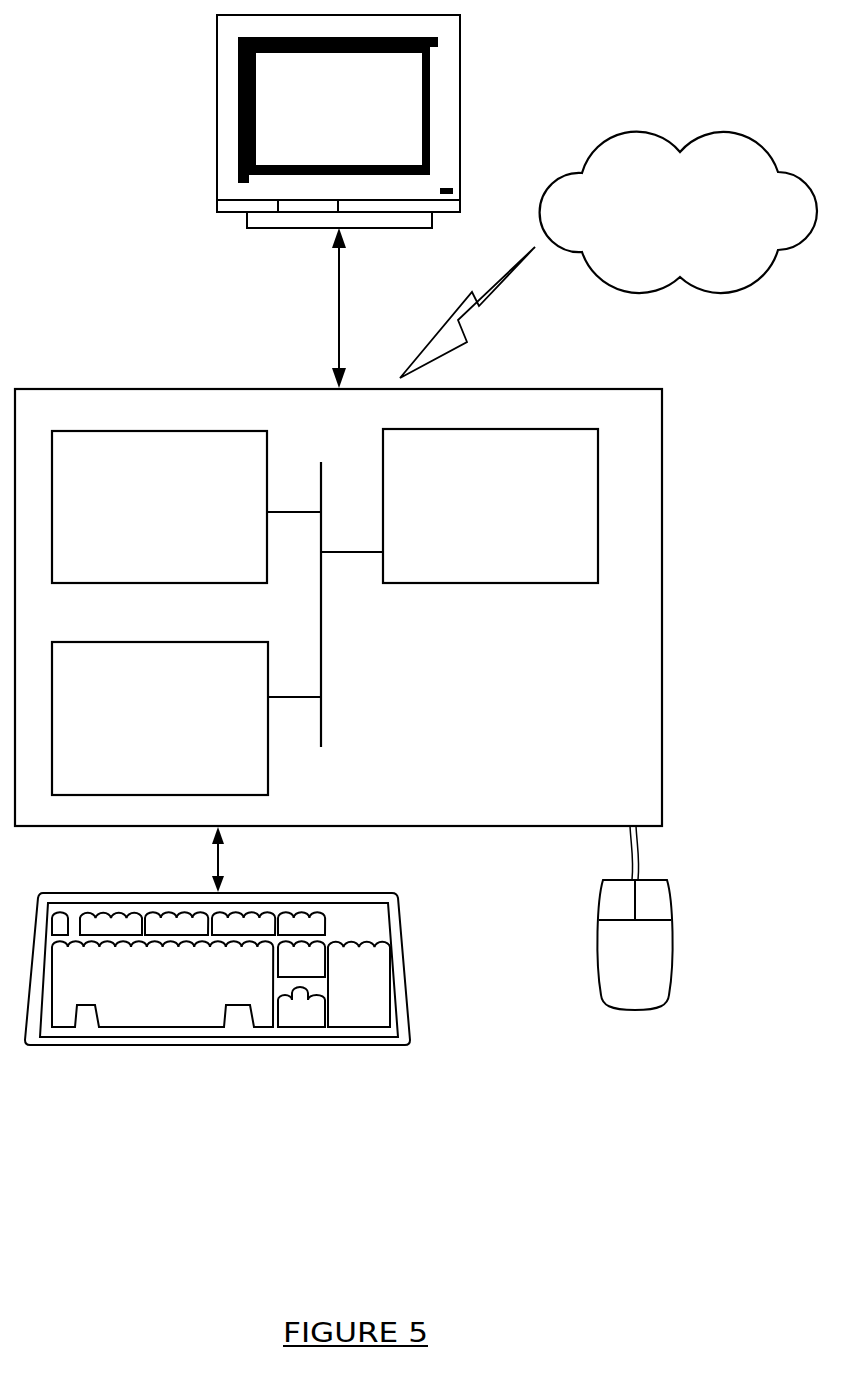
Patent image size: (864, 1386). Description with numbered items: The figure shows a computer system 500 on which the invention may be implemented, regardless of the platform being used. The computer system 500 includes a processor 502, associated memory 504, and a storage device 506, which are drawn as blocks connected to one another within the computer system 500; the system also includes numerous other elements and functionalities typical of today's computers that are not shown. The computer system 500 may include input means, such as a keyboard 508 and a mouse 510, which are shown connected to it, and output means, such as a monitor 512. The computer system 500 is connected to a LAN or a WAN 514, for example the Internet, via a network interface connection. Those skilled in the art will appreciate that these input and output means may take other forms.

The computer system 500 is at (698, 614).
The processor 502 is at (467, 523).
The memory 504 is at (138, 518).
The storage device 506 is at (136, 730).
The keyboard 508 is at (132, 1005).
The mouse 510 is at (614, 961).
The monitor 512 is at (317, 126).
The LAN or WAN 514 is at (671, 221).